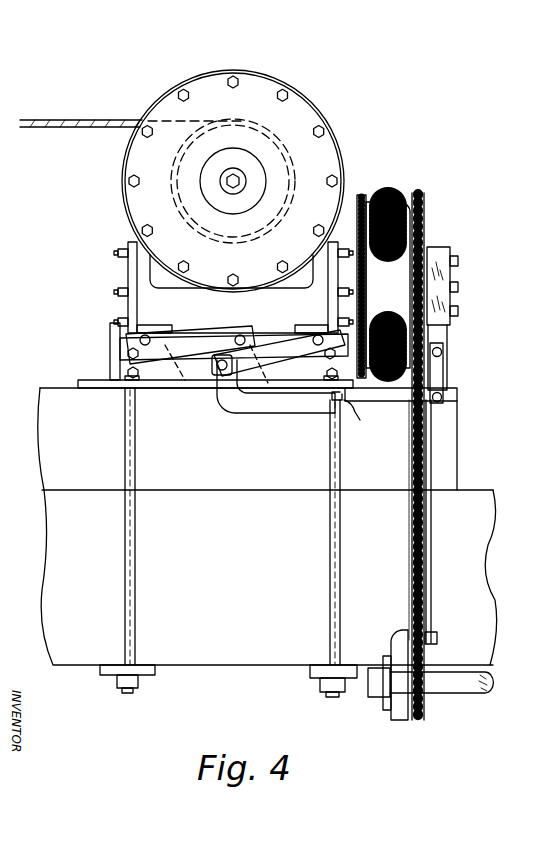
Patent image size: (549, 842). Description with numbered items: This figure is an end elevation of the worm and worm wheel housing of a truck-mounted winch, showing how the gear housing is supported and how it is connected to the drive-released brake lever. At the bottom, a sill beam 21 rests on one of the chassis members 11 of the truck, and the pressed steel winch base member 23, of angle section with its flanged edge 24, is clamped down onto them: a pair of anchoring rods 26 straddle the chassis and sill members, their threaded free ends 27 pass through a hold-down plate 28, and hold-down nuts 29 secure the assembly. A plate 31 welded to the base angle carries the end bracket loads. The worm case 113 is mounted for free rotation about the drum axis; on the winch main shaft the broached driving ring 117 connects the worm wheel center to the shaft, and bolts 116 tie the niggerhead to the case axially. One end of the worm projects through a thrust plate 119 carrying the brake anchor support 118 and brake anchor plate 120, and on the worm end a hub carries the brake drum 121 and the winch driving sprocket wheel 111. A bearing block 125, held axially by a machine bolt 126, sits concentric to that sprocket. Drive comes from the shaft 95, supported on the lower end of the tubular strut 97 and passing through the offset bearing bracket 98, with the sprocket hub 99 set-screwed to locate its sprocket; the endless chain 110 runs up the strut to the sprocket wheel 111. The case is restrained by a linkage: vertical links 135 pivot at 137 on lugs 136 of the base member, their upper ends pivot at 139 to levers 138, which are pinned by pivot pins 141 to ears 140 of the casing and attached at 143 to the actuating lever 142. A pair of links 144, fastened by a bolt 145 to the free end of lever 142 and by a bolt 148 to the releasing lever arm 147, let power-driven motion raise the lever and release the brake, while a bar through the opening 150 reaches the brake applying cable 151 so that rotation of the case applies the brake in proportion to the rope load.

The chassis member 11 is at (228, 648).
The sill beam 21 is at (42, 398).
The winch base member 23 is at (160, 392).
The flanged edge 24 is at (110, 352).
The anchoring rod 26 is at (123, 618).
The threaded free end 27 is at (127, 690).
The hold-down plate 28 is at (108, 676).
The hold-down nut 29 is at (137, 688).
The plate 31 is at (208, 390).
The shaft 95 is at (480, 695).
The tubular strut 97 is at (430, 572).
The offset bearing bracket 98 is at (400, 722).
The sprocket hub 99 is at (380, 705).
The endless chain 110 is at (420, 485).
The winch driving sprocket wheel 111 is at (427, 225).
The worm case 113 is at (307, 98).
The bolt 116 is at (247, 183).
The broached driving ring 117 is at (237, 150).
The brake anchor support 118 is at (345, 262).
The thrust plate 119 is at (356, 198).
The brake anchor plate 120 is at (372, 208).
The brake drum 121 is at (420, 200).
The bearing block 125 is at (449, 252).
The machine bolt 126 is at (458, 285).
The vertical link 135 is at (127, 364).
The lug 136 is at (123, 380).
The pivot 137 is at (132, 380).
The lever 138 is at (188, 342).
The pivot 139 is at (128, 351).
The ear 140 is at (282, 332).
The pivot pin 141 is at (140, 338).
The actuating lever 142 is at (237, 405).
The pivot 143 is at (225, 360).
The link 144 is at (443, 380).
The bolt 145 is at (442, 397).
The releasing lever arm 147 is at (450, 328).
The bolt 148 is at (442, 352).
The opening 150 is at (392, 415).
The brake applying cable 151 is at (457, 405).